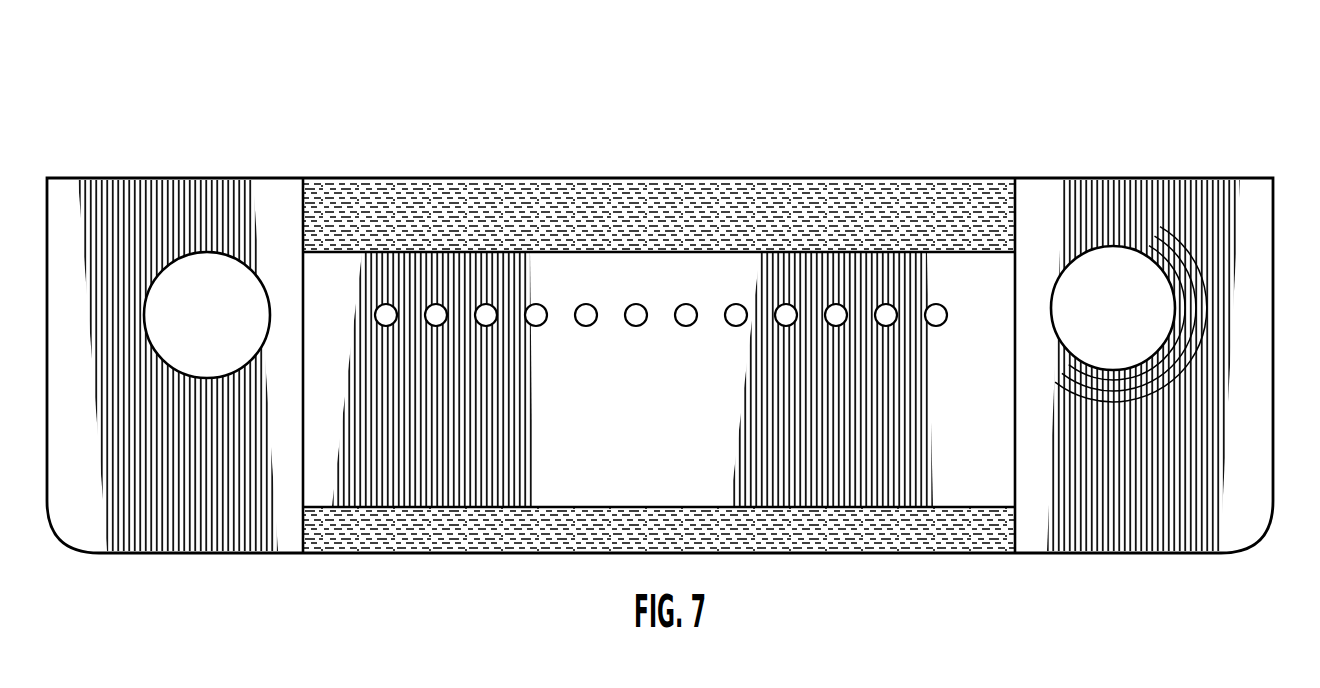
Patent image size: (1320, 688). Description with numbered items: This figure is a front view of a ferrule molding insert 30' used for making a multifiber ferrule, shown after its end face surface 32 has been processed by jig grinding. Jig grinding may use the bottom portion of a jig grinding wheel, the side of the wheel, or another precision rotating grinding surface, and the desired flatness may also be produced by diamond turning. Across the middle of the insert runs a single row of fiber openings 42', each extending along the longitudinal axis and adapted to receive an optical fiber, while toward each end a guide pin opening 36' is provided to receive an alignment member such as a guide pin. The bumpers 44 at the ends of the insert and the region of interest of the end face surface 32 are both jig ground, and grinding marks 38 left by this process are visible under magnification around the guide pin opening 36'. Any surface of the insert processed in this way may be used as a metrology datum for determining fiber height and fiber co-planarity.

The ferrule molding insert 30' is at (660, 285).
The end face surface 32 is at (602, 212).
The guide pin opening 36' is at (1113, 232).
The grinding marks 38 is at (1198, 366).
The fiber opening 42' is at (681, 203).
The bumper 44 is at (1253, 262).